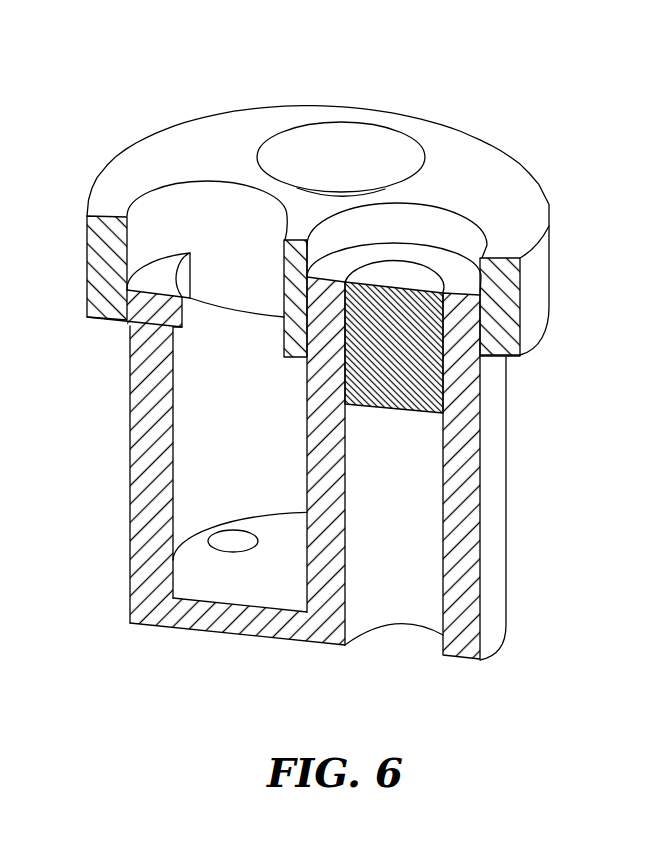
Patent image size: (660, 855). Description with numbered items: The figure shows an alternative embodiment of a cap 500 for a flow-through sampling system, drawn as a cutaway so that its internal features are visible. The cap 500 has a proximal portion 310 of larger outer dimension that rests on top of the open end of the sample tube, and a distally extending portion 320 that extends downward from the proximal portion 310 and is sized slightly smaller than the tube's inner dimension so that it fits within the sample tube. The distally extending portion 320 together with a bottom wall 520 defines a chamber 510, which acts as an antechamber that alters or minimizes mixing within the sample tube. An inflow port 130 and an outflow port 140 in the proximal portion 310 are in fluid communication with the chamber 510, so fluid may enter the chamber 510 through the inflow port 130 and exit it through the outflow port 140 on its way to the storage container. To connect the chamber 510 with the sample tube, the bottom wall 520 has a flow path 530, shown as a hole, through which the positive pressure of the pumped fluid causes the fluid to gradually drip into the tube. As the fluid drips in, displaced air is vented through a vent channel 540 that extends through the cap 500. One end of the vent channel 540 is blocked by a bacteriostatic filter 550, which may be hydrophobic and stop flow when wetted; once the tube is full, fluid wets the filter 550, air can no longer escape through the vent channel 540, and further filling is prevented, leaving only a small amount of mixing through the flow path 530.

The inflow port 130 is at (183, 204).
The outflow port 140 is at (348, 157).
The proximal portion 310 is at (215, 138).
The distally extending portion 320 is at (152, 443).
The cap 500 is at (566, 440).
The chamber 510 is at (238, 367).
The bottom wall 520 is at (225, 620).
The flow path 530 is at (232, 540).
The vent channel 540 is at (402, 568).
The bacteriostatic filter 550 is at (403, 322).